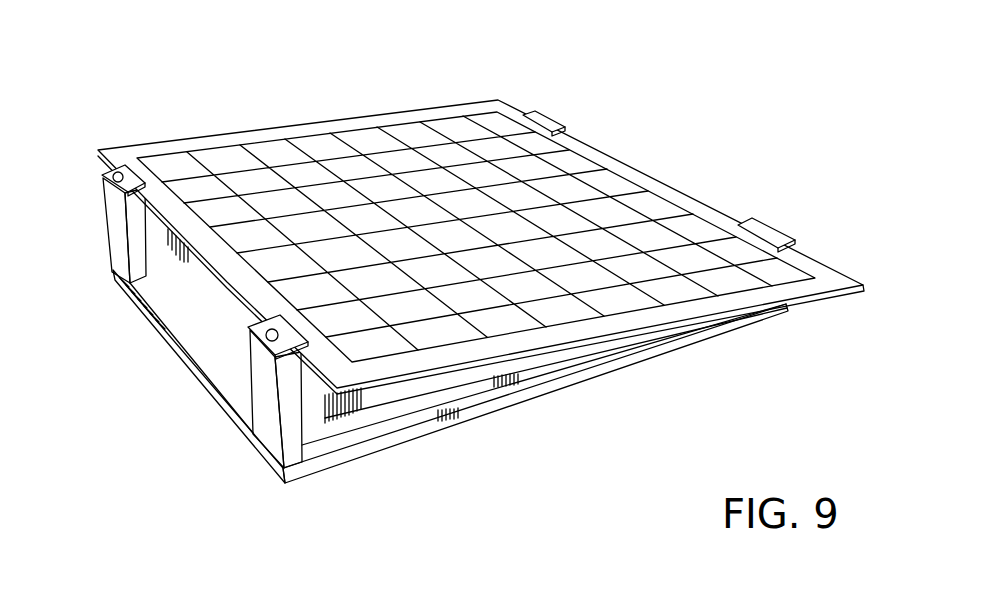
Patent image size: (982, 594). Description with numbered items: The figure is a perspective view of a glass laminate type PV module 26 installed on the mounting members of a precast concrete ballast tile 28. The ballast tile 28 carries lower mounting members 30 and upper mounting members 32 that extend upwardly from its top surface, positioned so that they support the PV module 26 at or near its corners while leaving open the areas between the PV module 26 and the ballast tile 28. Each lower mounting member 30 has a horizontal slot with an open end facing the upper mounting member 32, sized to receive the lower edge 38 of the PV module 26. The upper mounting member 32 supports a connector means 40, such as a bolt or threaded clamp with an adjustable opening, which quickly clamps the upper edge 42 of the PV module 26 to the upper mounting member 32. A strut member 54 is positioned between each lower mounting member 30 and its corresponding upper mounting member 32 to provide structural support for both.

The solar photovoltaic module 26 is at (313, 147).
The lower edge 38 is at (647, 173).
The lower mounting member 30 is at (764, 229).
The ballast tile 28 is at (213, 339).
The upper edge 42 is at (228, 272).
The connector means 40 is at (250, 331).
The upper mounting member 32 is at (263, 379).
The strut member 54 is at (380, 398).